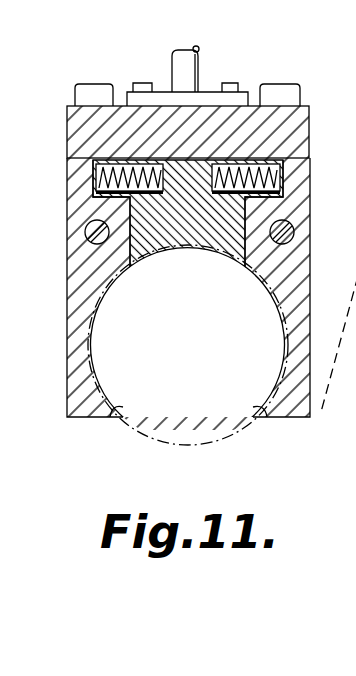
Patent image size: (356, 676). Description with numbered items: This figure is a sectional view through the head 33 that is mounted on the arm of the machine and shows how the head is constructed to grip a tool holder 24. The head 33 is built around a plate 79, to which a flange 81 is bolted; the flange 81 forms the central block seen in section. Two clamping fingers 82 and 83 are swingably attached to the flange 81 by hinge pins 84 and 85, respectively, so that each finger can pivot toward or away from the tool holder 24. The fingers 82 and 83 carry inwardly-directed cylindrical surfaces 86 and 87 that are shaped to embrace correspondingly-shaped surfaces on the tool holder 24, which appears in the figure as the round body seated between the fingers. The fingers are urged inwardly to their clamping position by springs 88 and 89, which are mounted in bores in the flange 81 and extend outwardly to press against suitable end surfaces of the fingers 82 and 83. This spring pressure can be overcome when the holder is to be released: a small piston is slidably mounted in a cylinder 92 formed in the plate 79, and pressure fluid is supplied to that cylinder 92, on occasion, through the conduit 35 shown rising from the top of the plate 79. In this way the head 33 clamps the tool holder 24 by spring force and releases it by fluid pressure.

The tool holder 24 is at (188, 363).
The head 33 is at (299, 110).
The conduit 35 is at (173, 66).
The plate 79 is at (76, 127).
The flange 81 is at (142, 214).
The clamping finger 82 is at (76, 347).
The clamping finger 83 is at (299, 328).
The hinge pin 84 is at (72, 236).
The hinge pin 85 is at (291, 228).
The cylindrical surface 86 is at (124, 422).
The cylindrical surface 87 is at (252, 420).
The spring 88 is at (128, 180).
The spring 89 is at (258, 180).
The cylinder 92 is at (215, 90).